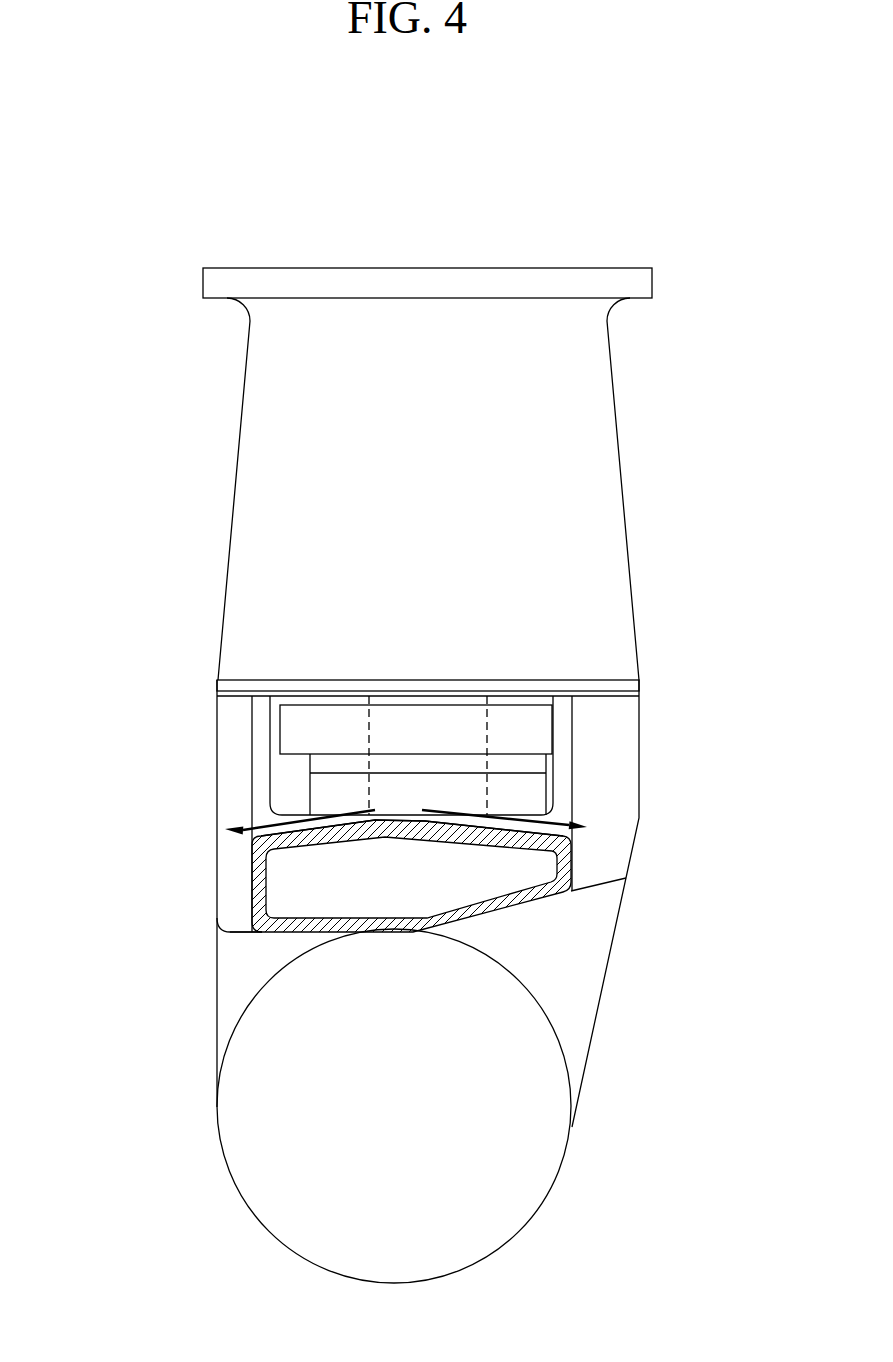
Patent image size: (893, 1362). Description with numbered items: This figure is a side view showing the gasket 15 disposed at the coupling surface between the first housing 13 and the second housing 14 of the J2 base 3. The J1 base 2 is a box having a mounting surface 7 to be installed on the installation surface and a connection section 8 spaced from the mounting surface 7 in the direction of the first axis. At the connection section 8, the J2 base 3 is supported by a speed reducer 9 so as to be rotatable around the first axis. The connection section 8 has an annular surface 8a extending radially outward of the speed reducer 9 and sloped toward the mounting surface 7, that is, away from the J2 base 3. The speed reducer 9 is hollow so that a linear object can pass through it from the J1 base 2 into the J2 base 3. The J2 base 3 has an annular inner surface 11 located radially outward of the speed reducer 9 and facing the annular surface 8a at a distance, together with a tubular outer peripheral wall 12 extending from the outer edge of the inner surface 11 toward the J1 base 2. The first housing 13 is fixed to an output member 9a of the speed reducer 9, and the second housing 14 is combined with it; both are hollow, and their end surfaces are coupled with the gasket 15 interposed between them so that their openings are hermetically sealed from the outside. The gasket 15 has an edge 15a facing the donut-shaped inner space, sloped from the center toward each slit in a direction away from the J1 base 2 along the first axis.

The mounting surface 7 is at (397, 268).
The J1 base 2 is at (205, 544).
The connection section 8 is at (217, 683).
The annular surface 8a is at (237, 698).
The speed reducer 9 is at (519, 700).
The output member 9a is at (553, 790).
The annular inner surface 11 is at (287, 813).
The tubular outer peripheral wall 12 is at (641, 758).
The first housing 13 is at (197, 876).
The second housing 14 is at (168, 889).
The gasket 15 is at (591, 865).
The edge 15a is at (322, 826).
The J2 base 3 is at (192, 1093).